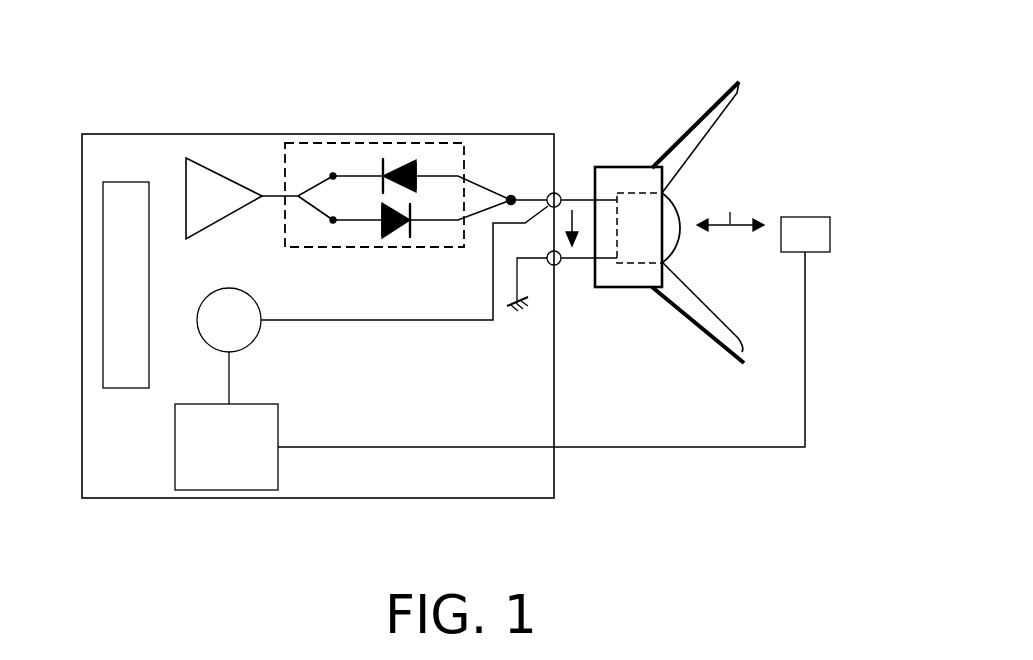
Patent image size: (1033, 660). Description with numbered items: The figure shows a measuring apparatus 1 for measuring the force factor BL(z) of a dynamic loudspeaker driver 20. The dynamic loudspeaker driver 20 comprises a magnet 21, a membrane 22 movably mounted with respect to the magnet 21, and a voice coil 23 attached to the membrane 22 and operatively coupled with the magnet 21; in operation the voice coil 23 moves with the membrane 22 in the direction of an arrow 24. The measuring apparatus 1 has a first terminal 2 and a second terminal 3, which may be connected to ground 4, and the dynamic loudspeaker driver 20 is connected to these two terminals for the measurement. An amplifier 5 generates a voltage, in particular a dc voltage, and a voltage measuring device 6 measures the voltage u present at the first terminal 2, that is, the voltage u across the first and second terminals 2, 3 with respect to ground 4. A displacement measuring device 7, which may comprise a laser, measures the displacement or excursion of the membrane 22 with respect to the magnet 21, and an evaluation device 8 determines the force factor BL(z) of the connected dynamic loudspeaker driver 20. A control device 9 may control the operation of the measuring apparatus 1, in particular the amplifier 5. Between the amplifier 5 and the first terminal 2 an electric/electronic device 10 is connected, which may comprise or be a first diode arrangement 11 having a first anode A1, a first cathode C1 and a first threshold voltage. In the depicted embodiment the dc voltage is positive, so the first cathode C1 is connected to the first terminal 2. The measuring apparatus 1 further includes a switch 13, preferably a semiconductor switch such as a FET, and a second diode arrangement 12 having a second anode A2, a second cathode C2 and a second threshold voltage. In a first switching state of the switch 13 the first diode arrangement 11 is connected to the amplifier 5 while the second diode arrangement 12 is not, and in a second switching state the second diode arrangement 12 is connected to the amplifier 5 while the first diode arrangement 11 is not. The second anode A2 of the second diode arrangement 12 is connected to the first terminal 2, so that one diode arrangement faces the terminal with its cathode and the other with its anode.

The measuring apparatus 1 is at (147, 108).
The first terminal 2 is at (552, 192).
The second terminal 3 is at (565, 266).
The ground 4 is at (515, 309).
The amplifier 5 is at (215, 210).
The voltage measuring device 6 is at (237, 335).
The displacement measuring device 7 is at (810, 217).
The evaluation device 8 is at (234, 462).
The control device 9 is at (134, 303).
The electric/electronic device 10 is at (273, 166).
The first diode arrangement 11 is at (405, 236).
The second diode arrangement 12 is at (396, 161).
The switch 13 is at (316, 188).
The dynamic loudspeaker driver 20 is at (740, 126).
The magnet 21 is at (644, 278).
The membrane 22 is at (698, 296).
The voice coil 23 is at (631, 193).
The arrow 24 is at (730, 212).
The first anode A1 is at (382, 220).
The second anode A2 is at (417, 173).
The first cathode C1 is at (412, 222).
The second cathode C2 is at (383, 175).
The voltage u is at (572, 210).